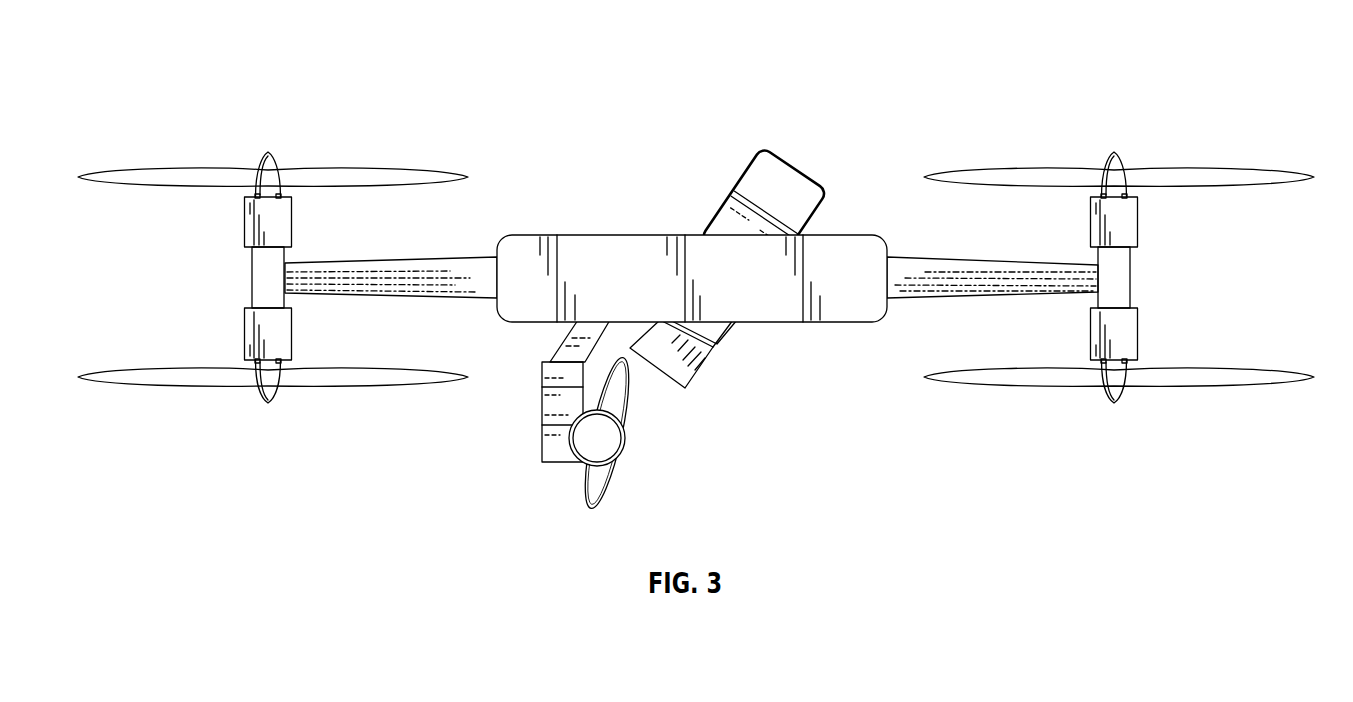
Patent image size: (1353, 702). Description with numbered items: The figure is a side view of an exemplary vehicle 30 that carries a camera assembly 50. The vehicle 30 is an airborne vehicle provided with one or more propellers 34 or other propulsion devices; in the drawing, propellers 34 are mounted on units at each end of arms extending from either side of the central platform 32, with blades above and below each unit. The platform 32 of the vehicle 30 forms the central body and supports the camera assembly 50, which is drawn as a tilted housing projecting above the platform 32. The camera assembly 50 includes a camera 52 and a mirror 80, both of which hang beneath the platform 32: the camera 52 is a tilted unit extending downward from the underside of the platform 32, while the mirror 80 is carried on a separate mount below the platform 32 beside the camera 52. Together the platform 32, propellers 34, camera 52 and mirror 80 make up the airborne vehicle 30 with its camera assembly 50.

The vehicle 30 is at (220, 101).
The platform 32 is at (582, 235).
The propellers 34 is at (268, 152).
The camera assembly 50 is at (793, 163).
The camera 52 is at (672, 378).
The mirror 80 is at (623, 478).